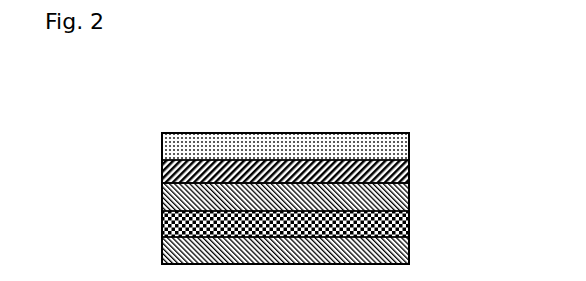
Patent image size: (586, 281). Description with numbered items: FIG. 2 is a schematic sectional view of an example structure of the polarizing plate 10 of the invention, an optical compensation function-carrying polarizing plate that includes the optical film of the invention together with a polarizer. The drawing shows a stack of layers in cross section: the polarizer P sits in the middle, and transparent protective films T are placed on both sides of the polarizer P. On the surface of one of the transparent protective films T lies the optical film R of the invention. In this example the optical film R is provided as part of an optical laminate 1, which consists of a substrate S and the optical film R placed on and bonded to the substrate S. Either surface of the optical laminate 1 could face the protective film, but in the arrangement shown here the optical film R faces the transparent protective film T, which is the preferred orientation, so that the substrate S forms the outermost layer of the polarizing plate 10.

The polarizing plate 10 is at (285, 114).
The optical laminate 1 is at (482, 140).
The substrate S is at (395, 151).
The optical film R is at (405, 175).
The transparent protective film T is at (395, 198).
The polarizer P is at (397, 223).